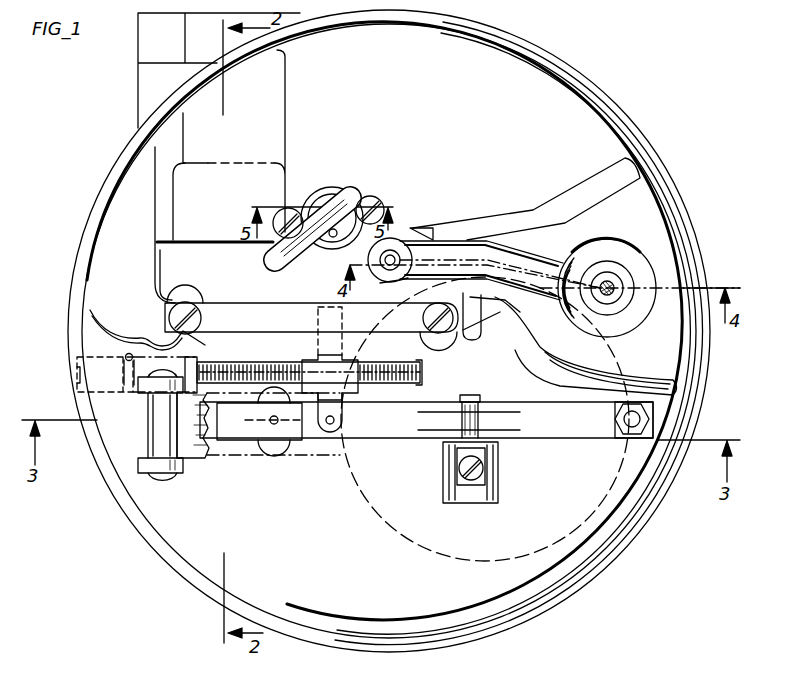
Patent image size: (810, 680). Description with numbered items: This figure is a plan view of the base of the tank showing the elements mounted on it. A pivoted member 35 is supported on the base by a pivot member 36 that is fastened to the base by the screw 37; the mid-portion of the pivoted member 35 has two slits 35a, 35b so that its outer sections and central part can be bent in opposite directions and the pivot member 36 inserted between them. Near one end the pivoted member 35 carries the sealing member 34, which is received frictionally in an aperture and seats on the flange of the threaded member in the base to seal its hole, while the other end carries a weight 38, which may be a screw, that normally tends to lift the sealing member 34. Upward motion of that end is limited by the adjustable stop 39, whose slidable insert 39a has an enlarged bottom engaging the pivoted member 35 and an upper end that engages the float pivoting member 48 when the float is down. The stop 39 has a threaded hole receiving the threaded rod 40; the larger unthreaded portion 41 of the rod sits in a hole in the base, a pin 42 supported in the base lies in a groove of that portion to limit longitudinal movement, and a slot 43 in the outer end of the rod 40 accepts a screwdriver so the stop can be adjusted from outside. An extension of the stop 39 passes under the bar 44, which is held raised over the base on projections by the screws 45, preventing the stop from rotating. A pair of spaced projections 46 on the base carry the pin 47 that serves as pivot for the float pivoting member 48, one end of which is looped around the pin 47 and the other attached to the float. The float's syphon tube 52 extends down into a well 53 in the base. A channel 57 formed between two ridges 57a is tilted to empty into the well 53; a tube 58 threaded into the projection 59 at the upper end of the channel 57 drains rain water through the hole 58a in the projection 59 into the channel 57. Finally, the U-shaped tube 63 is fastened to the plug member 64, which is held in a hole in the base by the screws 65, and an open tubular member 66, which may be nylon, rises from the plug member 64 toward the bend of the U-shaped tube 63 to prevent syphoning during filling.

The sealing member 34 is at (273, 427).
The pivoted member 35 is at (313, 440).
The slit 35a is at (488, 402).
The slit 35b is at (500, 428).
The pivot member 36 is at (478, 397).
The screw 37 is at (482, 470).
The weight 38 is at (655, 420).
The adjustable stop 39 is at (343, 428).
The slidable insert 39a is at (342, 352).
The rod 40 is at (283, 361).
The unthreaded portion 41 is at (199, 364).
The pin 42 is at (126, 354).
The slot 43 is at (76, 376).
The bar 44 is at (303, 305).
The screws 45 is at (194, 298).
The spaced projections 46 is at (143, 401).
The pin 47 is at (162, 483).
The float pivoting member 48 is at (190, 463).
The syphon tube 52 is at (582, 252).
The well 53 is at (612, 282).
The channel 57 is at (468, 252).
The ridges 57a is at (434, 280).
The tube 58 is at (397, 237).
The hole 58a is at (402, 286).
The projection 59 is at (410, 229).
The U-shaped tube 63 is at (314, 197).
The plug member 64 is at (341, 205).
The screws 65 is at (283, 209).
The tubular member 66 is at (323, 241).